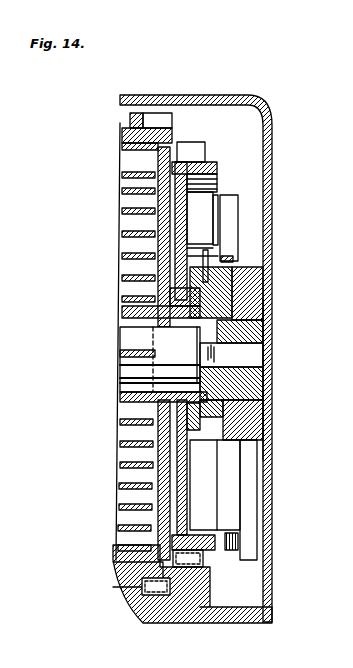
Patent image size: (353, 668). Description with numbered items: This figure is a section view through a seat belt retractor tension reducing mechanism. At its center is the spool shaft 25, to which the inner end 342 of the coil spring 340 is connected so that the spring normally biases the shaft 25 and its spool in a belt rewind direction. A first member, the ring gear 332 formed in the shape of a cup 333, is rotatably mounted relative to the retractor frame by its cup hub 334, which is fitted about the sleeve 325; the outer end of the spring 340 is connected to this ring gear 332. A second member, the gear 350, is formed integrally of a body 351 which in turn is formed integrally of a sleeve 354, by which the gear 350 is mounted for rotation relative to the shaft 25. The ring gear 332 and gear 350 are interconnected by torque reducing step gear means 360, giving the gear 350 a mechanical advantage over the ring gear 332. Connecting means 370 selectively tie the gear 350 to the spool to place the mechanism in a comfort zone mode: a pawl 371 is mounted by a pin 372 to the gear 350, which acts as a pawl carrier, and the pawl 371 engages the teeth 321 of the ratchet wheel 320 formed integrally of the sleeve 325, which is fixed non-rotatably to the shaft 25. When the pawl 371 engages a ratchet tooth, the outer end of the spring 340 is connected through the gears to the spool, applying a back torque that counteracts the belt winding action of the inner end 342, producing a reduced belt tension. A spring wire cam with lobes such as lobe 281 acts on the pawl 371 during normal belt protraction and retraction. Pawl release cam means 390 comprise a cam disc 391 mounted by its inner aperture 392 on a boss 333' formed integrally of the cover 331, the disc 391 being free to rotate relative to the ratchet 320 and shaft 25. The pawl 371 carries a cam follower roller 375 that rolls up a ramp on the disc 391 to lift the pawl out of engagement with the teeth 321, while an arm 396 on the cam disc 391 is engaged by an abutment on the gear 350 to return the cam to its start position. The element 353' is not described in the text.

The shaft 25 is at (123, 368).
The lobe of spring wire cam 281 is at (218, 258).
The ratchet wheel 320 is at (230, 432).
The teeth of ratchet wheel 321 is at (197, 458).
The sleeve 325 is at (118, 395).
The cover 331 is at (270, 205).
The ring gear 332 is at (152, 118).
The cup 333 is at (112, 351).
The boss 333' is at (268, 329).
The cup hub 334 is at (190, 320).
The coil spring 340 is at (130, 498).
The inner end of spring 342 is at (122, 349).
The gear 350 is at (193, 152).
The body 351 is at (177, 512).
The slot 353' is at (246, 567).
The sleeve 354 is at (230, 267).
The step gear means 360 is at (162, 628).
The connecting means 370 is at (272, 163).
The pawl 371 is at (160, 233).
The pin 372 is at (178, 218).
The cam follower roller 375 is at (248, 200).
The pawl release cam means 390 is at (258, 295).
The cam disc 391 is at (250, 412).
The inner aperture 392 is at (263, 380).
The arm 396 is at (247, 500).